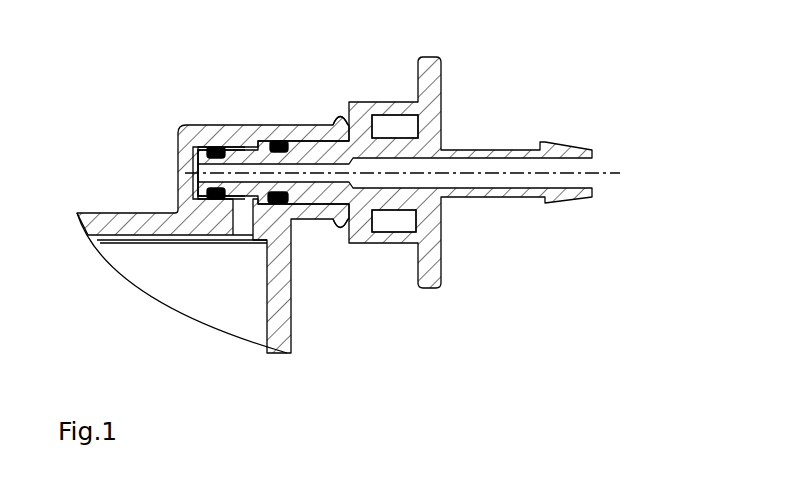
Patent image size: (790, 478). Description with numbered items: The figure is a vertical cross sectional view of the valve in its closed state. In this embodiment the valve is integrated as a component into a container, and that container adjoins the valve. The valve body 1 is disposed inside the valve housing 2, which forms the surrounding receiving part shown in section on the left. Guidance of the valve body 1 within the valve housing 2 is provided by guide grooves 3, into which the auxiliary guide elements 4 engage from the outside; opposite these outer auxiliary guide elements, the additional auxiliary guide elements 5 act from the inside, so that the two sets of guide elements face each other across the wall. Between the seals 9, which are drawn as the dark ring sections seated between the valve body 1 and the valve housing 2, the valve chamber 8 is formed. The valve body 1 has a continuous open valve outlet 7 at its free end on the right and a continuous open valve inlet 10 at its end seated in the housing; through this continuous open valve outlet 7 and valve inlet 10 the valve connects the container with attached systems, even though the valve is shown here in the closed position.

The valve body 1 is at (570, 197).
The valve housing 2 is at (302, 132).
The guide grooves 3 is at (392, 232).
The auxiliary guide elements 4 is at (395, 247).
The additional auxiliary guide elements 5 is at (348, 222).
The valve outlet 7 is at (593, 162).
The valve chamber 8 is at (258, 147).
The seals 9 is at (284, 203).
The valve inlet 10 is at (190, 165).